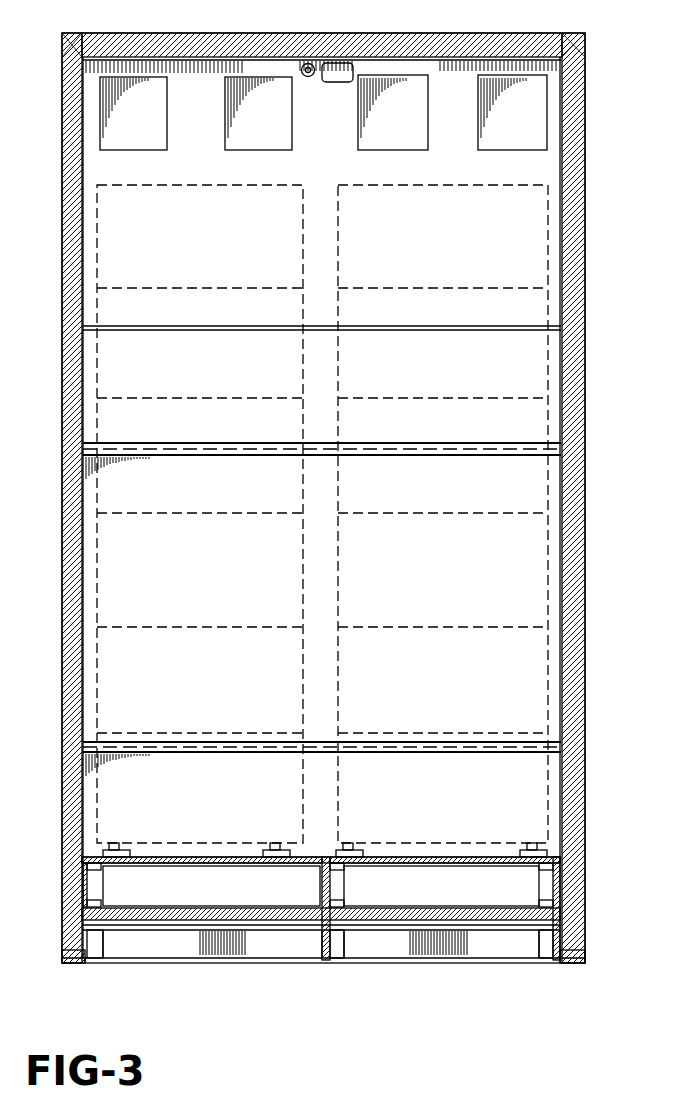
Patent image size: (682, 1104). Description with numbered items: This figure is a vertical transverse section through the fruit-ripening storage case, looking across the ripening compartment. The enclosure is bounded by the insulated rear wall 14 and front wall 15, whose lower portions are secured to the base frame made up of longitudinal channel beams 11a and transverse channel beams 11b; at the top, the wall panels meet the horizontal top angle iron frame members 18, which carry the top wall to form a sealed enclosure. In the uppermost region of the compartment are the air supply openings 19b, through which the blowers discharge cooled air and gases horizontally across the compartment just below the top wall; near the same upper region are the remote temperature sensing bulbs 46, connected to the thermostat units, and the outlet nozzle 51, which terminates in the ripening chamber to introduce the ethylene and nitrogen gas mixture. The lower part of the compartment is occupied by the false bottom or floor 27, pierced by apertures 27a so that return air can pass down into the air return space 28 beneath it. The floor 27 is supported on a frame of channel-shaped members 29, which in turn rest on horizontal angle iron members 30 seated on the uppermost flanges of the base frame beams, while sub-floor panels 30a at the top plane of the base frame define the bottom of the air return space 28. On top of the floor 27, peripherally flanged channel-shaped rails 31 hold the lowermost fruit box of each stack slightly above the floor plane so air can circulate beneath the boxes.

The longitudinal channel beams 11a is at (93, 963).
The transverse channel beams 11b is at (412, 947).
The rear wall 14 is at (585, 493).
The front wall 15 is at (62, 497).
The horizontal top angle iron frame members 18 is at (90, 72).
The air supply openings 19b is at (237, 118).
The false bottom or floor 27 is at (388, 857).
The apertures 27a is at (213, 857).
The air return space 28 is at (445, 896).
The channel-shaped members 29 is at (87, 893).
The horizontal angle iron members 30 is at (525, 907).
The sub-floor panels 30a is at (255, 905).
The channel-shaped rails 31 is at (112, 846).
The remote temperature sensing bulbs 46 is at (340, 64).
The outlet nozzle 51 is at (307, 63).